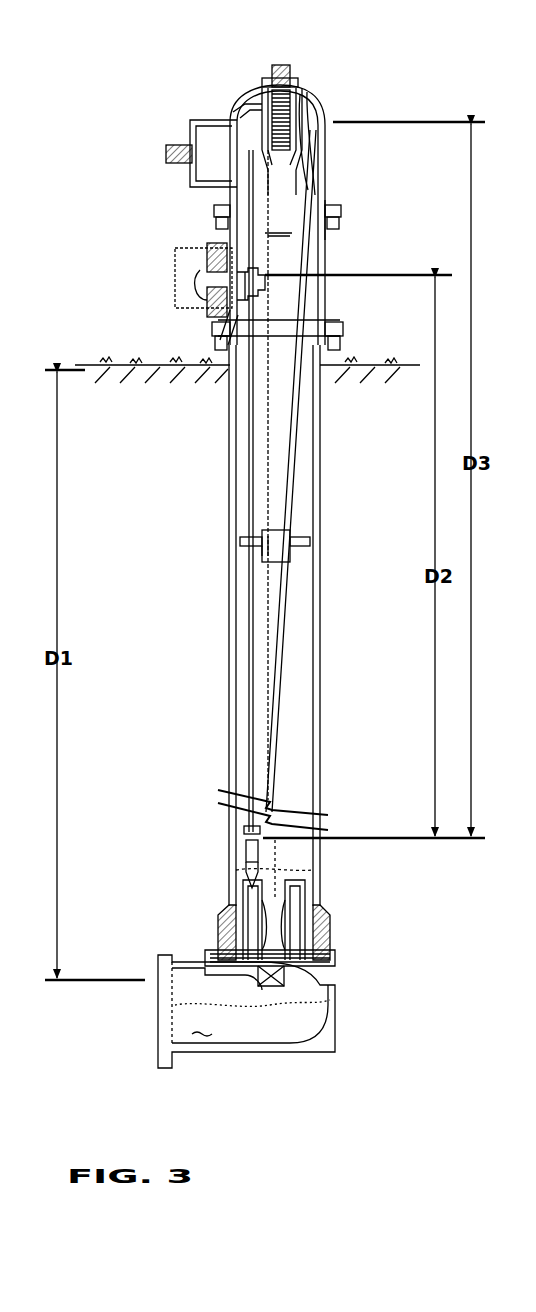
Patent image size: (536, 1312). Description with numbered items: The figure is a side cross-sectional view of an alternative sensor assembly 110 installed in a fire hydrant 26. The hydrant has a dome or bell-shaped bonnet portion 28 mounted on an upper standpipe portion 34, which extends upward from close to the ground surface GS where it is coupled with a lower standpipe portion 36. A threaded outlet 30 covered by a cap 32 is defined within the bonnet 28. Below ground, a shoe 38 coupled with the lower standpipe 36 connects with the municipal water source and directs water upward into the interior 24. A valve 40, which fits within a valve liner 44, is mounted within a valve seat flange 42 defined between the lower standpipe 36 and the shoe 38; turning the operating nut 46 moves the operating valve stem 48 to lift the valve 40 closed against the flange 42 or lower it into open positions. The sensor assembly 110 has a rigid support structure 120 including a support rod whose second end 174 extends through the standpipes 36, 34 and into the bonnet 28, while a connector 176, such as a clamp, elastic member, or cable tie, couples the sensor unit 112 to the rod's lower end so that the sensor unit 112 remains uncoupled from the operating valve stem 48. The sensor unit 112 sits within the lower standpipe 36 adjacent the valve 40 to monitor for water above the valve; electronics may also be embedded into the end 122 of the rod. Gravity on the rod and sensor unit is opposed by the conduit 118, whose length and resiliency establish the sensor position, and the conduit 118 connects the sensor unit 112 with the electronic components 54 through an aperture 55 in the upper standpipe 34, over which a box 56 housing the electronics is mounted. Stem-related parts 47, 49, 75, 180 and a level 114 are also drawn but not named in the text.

The interior 24 is at (298, 851).
The fire hydrant 26 is at (360, 230).
The bonnet portion 28 is at (326, 104).
The threaded outlet 30 is at (218, 160).
The cap 32 is at (190, 150).
The upper standpipe portion 34 is at (326, 258).
The lower standpipe portion 36 is at (321, 458).
The shoe 38 is at (338, 1010).
The valve 40 is at (330, 930).
The valve seat flange 42 is at (306, 968).
The valve liner 44 is at (336, 950).
The operating nut 46 is at (278, 68).
The stem coupling 47 is at (248, 540).
The operating valve stem 48 is at (283, 690).
The coupling block 49 is at (286, 556).
The electronic components 54 is at (208, 266).
The aperture 55 is at (322, 215).
The box 56 is at (207, 302).
The stem threads 75 is at (236, 110).
The sensor assembly 110 is at (240, 312).
The sensor unit 112 is at (243, 862).
The water level 114 is at (262, 871).
The conduit 118 is at (252, 550).
The rigid support structure 120 is at (294, 490).
The end of support rod 122 is at (278, 812).
The second end 174 is at (300, 122).
The connector 176 is at (244, 830).
The coupler 180 is at (266, 290).
The ground surface GS is at (112, 365).